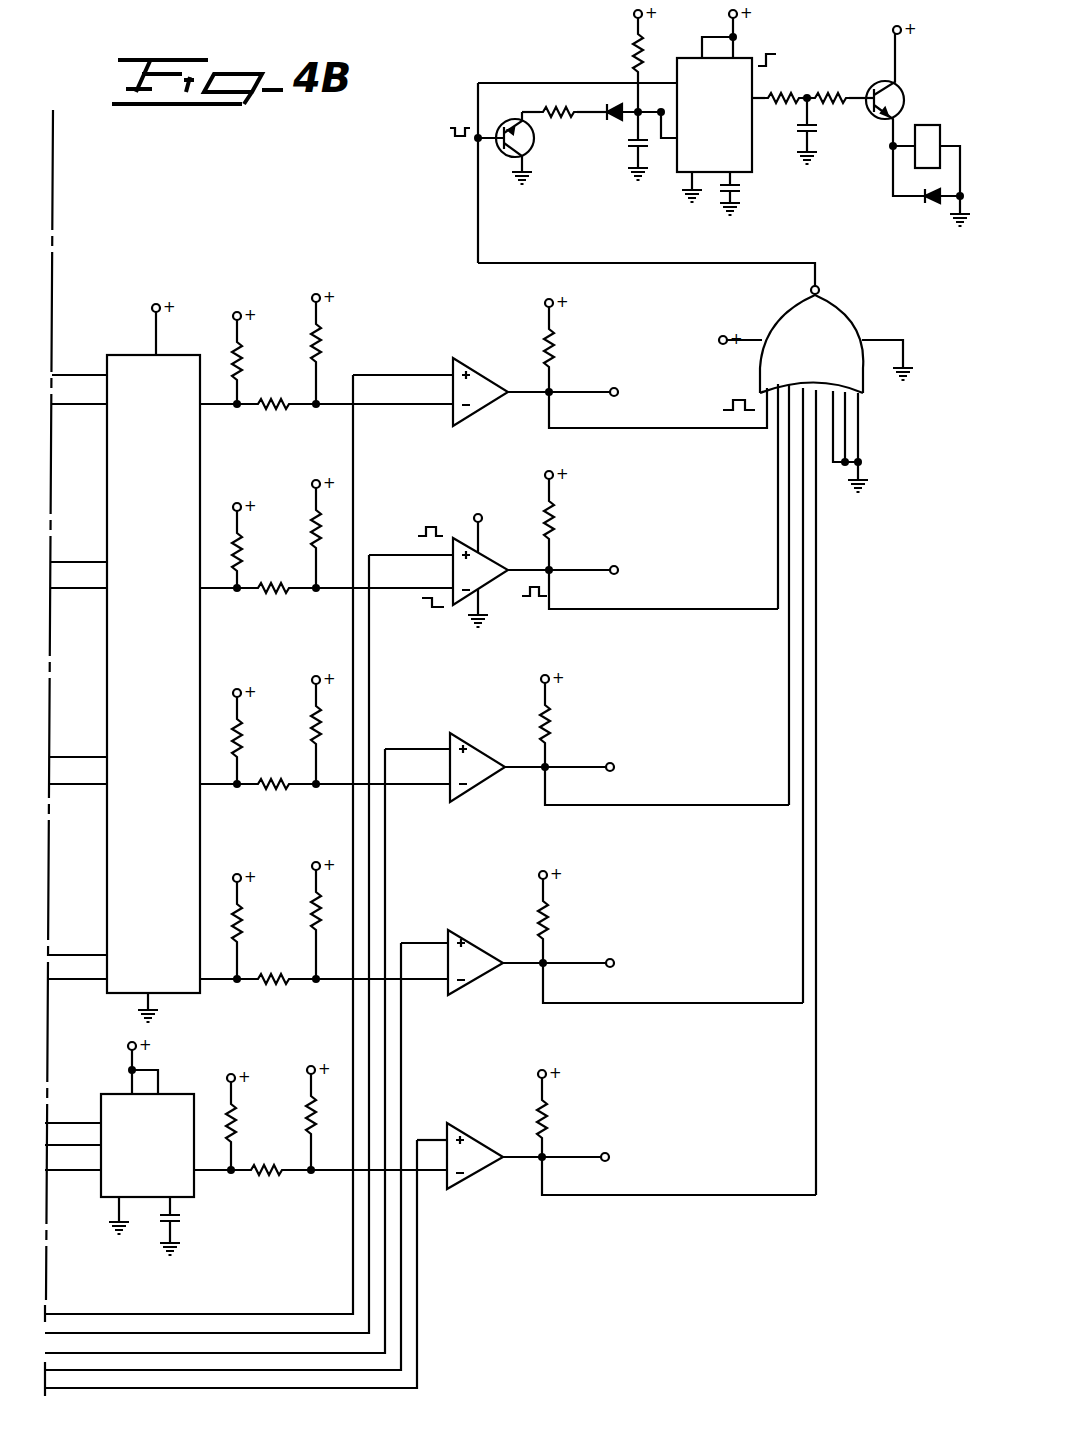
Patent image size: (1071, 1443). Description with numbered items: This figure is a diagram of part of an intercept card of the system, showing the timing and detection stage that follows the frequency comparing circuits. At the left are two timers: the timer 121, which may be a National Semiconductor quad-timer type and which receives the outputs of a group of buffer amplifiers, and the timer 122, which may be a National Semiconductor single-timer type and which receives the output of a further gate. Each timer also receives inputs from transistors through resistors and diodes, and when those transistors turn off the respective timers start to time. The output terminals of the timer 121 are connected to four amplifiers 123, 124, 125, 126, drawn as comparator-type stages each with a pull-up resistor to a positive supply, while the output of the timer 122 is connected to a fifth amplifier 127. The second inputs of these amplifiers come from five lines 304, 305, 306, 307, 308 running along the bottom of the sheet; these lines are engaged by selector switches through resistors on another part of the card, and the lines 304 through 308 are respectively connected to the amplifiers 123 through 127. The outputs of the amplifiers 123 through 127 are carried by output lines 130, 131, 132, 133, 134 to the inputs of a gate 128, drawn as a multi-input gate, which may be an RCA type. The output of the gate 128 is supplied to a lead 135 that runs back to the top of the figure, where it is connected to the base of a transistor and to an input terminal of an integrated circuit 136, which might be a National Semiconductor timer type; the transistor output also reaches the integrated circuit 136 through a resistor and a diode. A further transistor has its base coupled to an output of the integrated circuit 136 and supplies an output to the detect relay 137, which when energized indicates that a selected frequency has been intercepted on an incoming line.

The timer 121 is at (177, 370).
The timer 122 is at (172, 1105).
The amplifier 123 is at (497, 364).
The amplifier 124 is at (490, 565).
The amplifier 125 is at (478, 760).
The amplifier 126 is at (476, 955).
The amplifier 127 is at (482, 1148).
The gate 128 is at (795, 319).
The comparator output line 130 is at (630, 428).
The comparator output line 131 is at (684, 610).
The comparator output line 132 is at (684, 790).
The comparator output line 133 is at (660, 1003).
The comparator output line 134 is at (678, 1194).
The lead 135 is at (580, 262).
The integrated circuit 136 is at (758, 86).
The detect relay 137 is at (928, 125).
The line 304 is at (142, 1296).
The line 305 is at (191, 1330).
The line 306 is at (260, 1352).
The line 307 is at (141, 1371).
The line 308 is at (248, 1388).